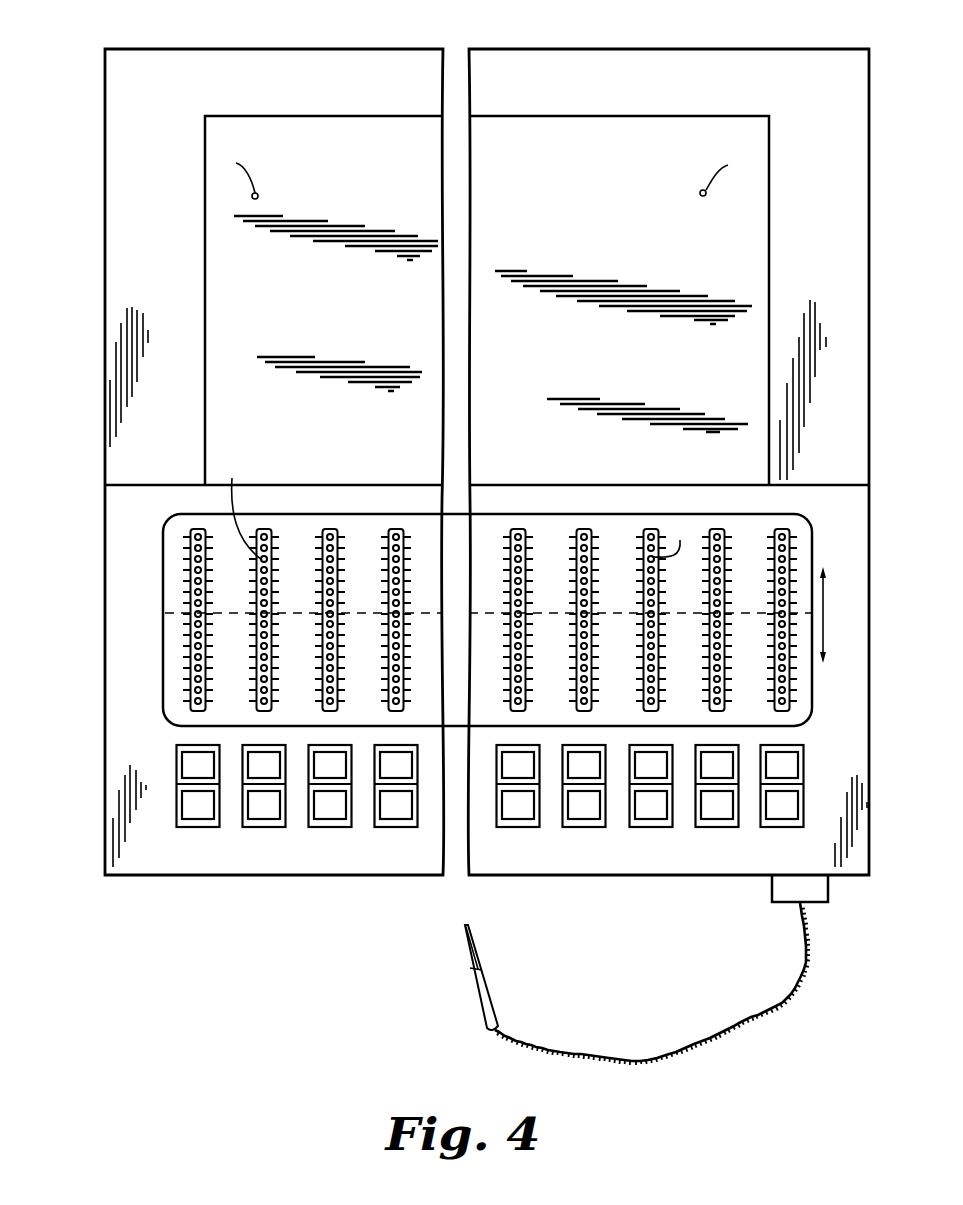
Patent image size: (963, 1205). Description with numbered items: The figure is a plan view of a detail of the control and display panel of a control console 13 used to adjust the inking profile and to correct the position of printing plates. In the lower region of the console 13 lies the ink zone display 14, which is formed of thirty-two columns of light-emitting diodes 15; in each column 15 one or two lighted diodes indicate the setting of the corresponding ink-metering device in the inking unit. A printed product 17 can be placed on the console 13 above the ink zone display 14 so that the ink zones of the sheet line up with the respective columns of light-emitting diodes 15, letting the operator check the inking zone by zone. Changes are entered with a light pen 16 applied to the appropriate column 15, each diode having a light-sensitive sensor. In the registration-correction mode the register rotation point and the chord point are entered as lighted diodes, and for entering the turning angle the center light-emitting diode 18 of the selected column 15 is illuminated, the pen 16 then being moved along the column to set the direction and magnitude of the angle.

The control console 13 is at (713, 88).
The ink zone display 14 is at (93, 682).
The indicator lamp columns 15 is at (323, 519).
The light pen 16 is at (480, 1003).
The printed product 17 is at (521, 135).
The center light-emitting diode 18 is at (650, 611).